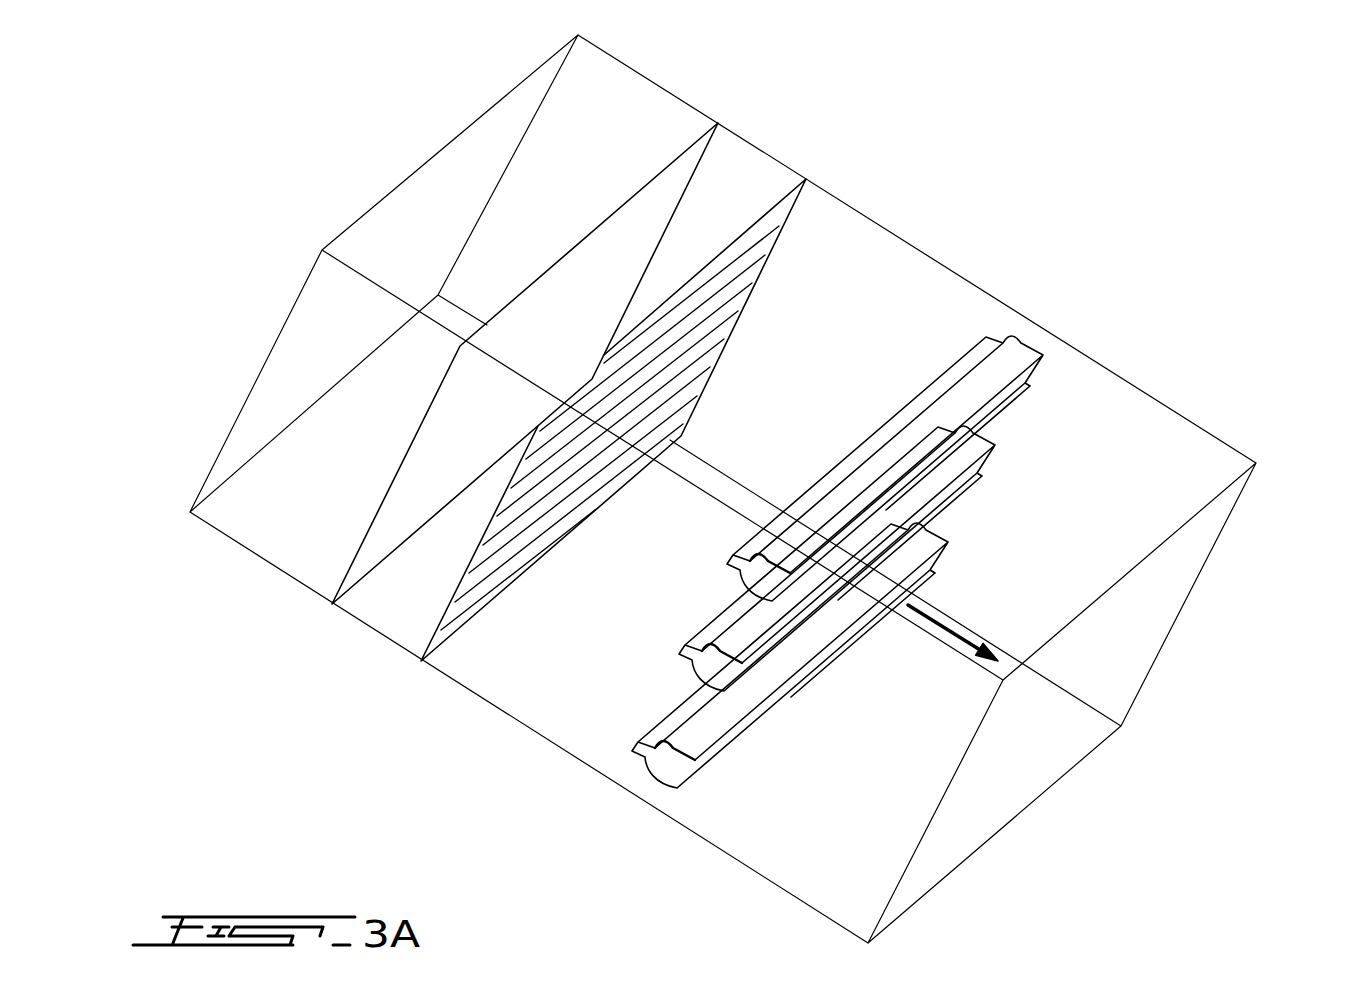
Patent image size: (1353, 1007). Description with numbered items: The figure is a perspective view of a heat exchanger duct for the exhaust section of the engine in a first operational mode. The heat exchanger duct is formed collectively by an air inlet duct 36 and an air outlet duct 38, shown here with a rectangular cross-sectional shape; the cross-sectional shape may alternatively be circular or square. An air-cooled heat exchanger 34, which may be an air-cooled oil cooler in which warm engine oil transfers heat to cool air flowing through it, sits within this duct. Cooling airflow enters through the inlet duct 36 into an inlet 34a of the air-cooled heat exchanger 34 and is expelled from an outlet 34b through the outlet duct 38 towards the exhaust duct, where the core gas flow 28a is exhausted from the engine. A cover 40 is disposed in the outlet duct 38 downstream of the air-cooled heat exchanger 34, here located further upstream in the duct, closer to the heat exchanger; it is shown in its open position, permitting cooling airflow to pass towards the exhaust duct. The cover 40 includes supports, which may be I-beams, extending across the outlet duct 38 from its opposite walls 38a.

The air inlet duct 36 is at (458, 177).
The air-cooled heat exchanger 34 is at (571, 344).
The inlet 34a is at (513, 300).
The outlet 34b is at (735, 287).
The air outlet duct 38 is at (968, 515).
The walls 38a is at (603, 627).
The cover 40 is at (943, 515).
The core gas flow 28a is at (930, 623).